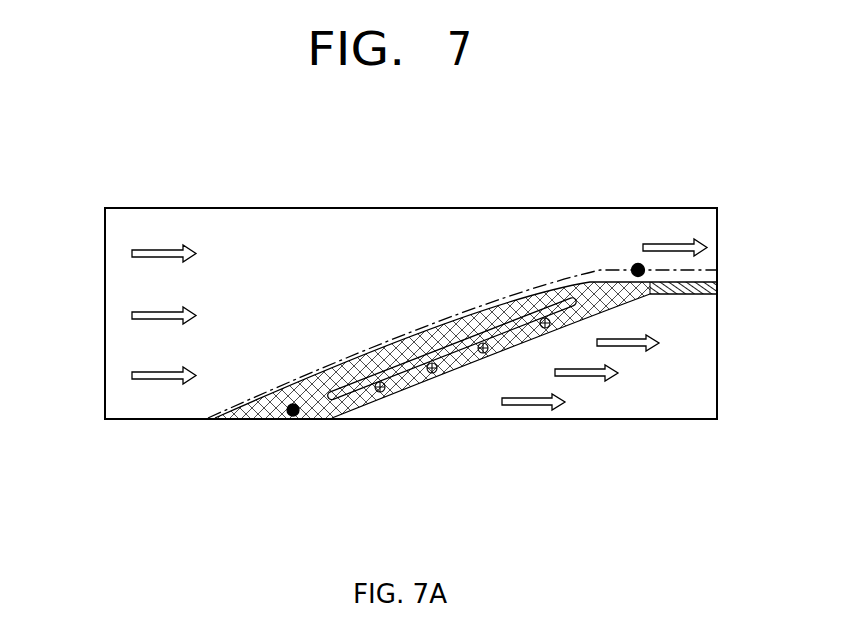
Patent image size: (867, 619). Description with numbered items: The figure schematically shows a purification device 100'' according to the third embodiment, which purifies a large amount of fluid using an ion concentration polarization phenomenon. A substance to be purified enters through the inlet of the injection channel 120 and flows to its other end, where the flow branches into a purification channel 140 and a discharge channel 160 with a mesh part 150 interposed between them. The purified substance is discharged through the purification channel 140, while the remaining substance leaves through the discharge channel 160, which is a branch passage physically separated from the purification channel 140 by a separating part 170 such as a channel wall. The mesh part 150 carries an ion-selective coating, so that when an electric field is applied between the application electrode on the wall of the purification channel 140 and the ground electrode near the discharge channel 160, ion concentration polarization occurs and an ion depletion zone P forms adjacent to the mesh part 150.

The purification device 100'' is at (391, 284).
The injection channel 120 is at (125, 226).
The purification channel 140 is at (690, 347).
The mesh part 150 is at (455, 373).
The discharge channel 160 is at (707, 226).
The separating part 170 is at (717, 287).
The ion depletion zone P is at (485, 293).